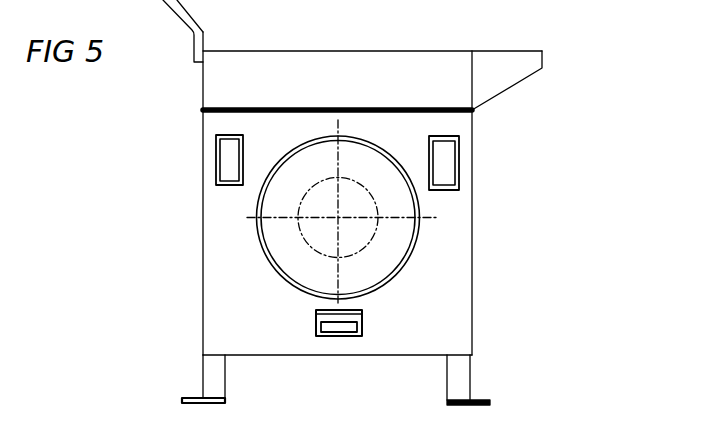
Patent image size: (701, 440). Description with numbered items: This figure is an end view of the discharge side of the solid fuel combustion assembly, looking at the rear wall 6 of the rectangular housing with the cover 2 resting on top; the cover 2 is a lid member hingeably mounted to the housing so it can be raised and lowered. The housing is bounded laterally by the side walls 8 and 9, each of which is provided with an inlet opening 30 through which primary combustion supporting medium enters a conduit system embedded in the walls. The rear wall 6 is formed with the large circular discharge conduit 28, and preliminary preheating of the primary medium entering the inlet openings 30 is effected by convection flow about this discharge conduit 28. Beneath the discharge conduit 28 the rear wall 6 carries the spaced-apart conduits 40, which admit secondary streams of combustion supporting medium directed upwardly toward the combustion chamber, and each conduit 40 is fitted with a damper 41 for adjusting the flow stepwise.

The cover 2 is at (337, 69).
The rear wall 6 is at (228, 254).
The side wall 8 is at (474, 236).
The side wall 9 is at (201, 188).
The discharge conduit 28 is at (298, 260).
The inlet opening 30 is at (228, 155).
The conduit 40 is at (353, 374).
The damper 41 is at (345, 328).